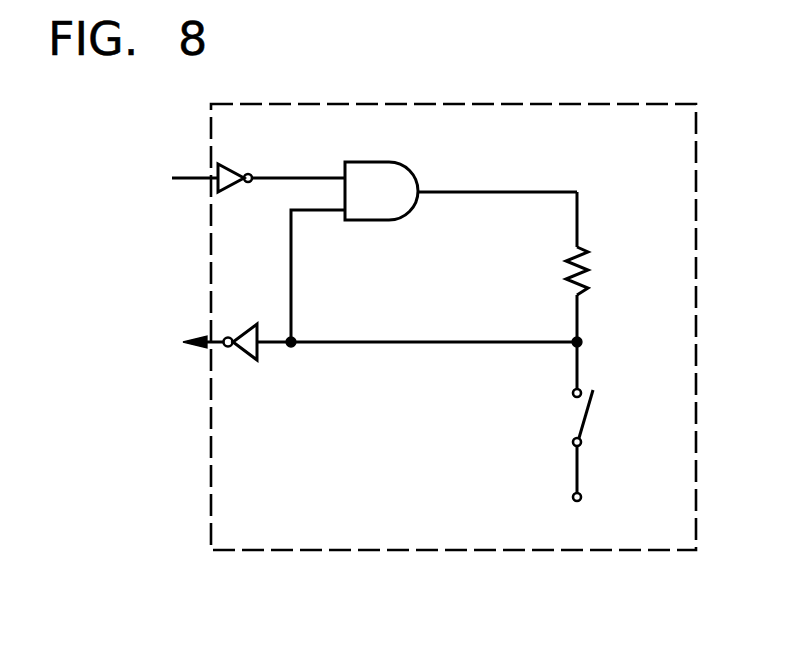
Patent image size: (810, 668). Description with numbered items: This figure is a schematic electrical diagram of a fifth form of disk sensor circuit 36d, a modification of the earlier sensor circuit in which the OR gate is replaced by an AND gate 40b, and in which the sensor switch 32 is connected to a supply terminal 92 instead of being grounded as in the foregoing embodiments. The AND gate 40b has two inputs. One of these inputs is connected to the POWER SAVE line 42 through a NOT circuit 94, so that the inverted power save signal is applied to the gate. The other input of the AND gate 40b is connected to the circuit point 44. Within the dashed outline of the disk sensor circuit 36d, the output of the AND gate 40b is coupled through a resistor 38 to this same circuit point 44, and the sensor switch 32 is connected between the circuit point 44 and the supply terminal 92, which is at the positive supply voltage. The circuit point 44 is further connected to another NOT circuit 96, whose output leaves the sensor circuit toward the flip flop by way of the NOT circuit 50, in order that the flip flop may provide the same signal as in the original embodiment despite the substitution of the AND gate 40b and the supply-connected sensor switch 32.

The disk sensor circuit 36d is at (696, 199).
The POWER SAVE line 42 is at (181, 170).
The NOT circuit 94 is at (234, 167).
The AND gate 40b is at (371, 162).
The NOT circuit 96 is at (243, 361).
The NOT circuit 50 is at (131, 346).
The resistor 38 is at (589, 266).
The circuit point 44 is at (583, 341).
The sensor switch 32 is at (590, 415).
The supply terminal 92 is at (582, 497).